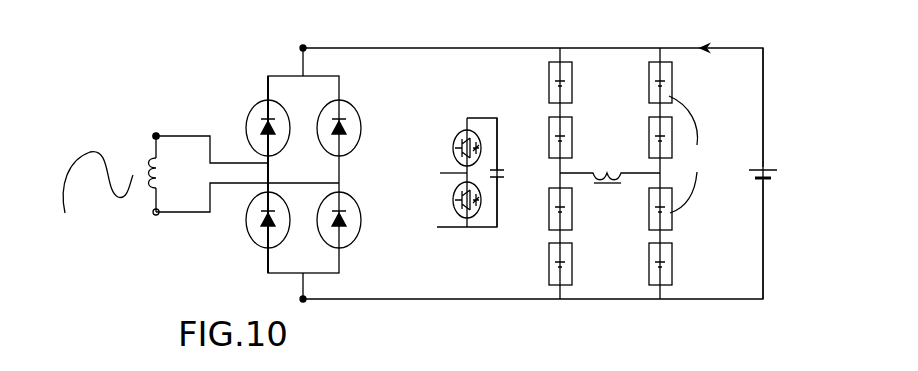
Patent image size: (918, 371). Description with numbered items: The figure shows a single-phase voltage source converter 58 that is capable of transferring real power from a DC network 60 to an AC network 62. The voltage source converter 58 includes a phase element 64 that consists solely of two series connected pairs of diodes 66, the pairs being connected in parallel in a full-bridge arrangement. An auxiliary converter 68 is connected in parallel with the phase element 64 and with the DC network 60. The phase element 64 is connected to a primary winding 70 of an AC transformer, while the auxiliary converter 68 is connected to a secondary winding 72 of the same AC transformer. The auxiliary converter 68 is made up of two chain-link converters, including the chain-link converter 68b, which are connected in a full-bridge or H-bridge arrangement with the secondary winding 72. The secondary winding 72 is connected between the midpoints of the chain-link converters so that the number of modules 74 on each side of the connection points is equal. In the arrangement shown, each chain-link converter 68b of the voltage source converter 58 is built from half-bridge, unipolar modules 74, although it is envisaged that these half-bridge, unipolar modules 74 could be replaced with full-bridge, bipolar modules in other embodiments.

The single-phase voltage source converter 58 is at (172, 90).
The DC network 60 is at (766, 168).
The AC network 62 is at (92, 196).
The phase element 64 is at (311, 140).
The diode 66 is at (262, 128).
The auxiliary converter 68 is at (560, 171).
The chain-link converter 68b is at (566, 270).
The primary winding 70 is at (148, 186).
The secondary winding 72 is at (598, 170).
The module 74 is at (398, 248).